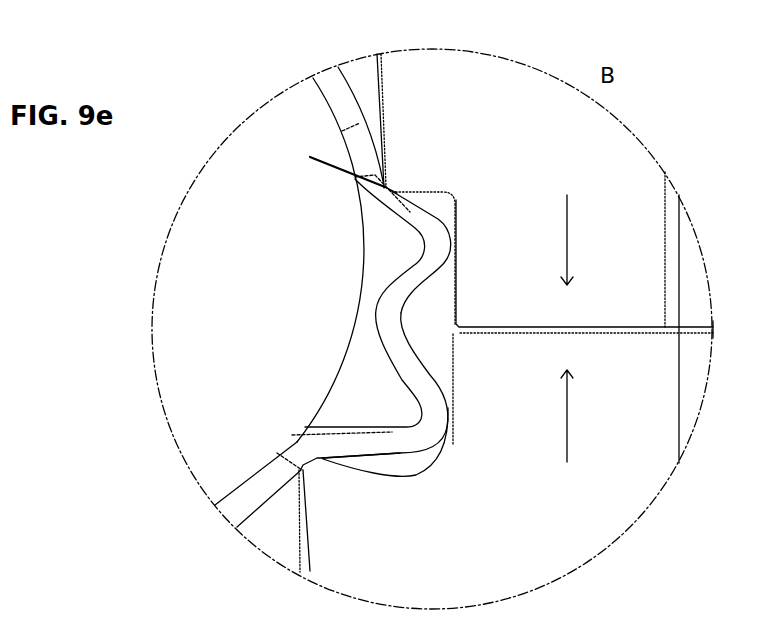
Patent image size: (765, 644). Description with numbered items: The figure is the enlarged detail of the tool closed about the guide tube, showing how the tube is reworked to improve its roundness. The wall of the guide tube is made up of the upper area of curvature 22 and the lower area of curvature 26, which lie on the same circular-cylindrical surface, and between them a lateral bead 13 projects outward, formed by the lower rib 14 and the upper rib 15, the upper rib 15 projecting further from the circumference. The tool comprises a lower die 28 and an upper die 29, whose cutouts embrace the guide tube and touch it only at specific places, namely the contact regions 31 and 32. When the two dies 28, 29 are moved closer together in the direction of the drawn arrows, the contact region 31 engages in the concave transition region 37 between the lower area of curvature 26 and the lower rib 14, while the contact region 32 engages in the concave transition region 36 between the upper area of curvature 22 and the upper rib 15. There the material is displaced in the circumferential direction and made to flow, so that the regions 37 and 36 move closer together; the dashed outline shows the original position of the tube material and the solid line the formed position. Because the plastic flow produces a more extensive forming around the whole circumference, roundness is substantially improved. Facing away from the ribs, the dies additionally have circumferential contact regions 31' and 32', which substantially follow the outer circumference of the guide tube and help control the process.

The lateral bead 13 is at (395, 305).
The lower rib 14 is at (438, 247).
The upper rib 15 is at (432, 400).
The upper area of curvature 22 is at (237, 505).
The lower area of curvature 26 is at (330, 88).
The lower die 28 is at (610, 177).
The upper die 29 is at (262, 0).
The contact region 31 is at (420, 301).
The circumferential contact region 31' is at (412, 121).
The contact region 32 is at (361, 485).
The circumferential contact region 32' is at (335, 521).
The concave transition region 36 is at (303, 452).
The concave transition region 37 is at (312, 157).